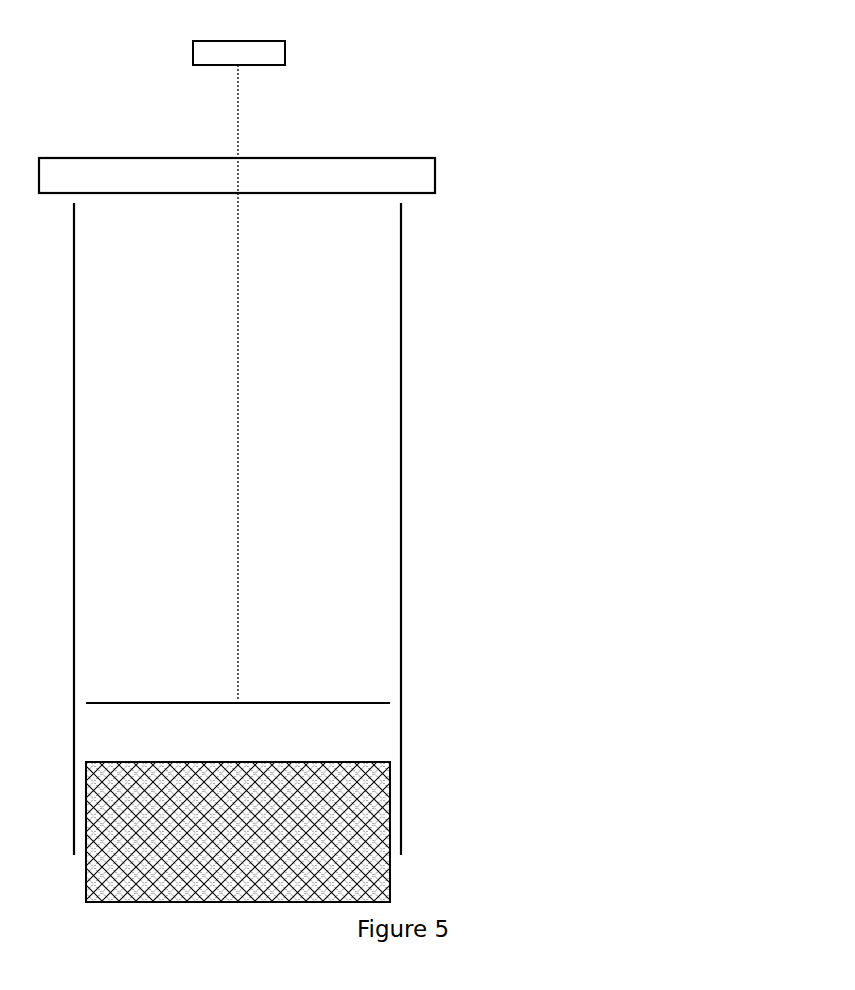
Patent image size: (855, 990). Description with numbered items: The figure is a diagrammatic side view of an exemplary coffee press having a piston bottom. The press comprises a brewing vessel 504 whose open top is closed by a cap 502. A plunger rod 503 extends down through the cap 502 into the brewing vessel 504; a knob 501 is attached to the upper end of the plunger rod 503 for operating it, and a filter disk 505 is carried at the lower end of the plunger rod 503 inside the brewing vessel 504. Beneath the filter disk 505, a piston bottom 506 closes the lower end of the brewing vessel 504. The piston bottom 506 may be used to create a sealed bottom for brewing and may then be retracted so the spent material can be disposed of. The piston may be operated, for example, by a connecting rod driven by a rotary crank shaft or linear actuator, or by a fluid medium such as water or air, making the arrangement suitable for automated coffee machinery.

The knob 501 is at (286, 53).
The cap 502 is at (334, 158).
The plunger rod 503 is at (238, 425).
The brewing vessel 504 is at (403, 552).
The filter disk 505 is at (309, 703).
The piston bottom 506 is at (392, 759).